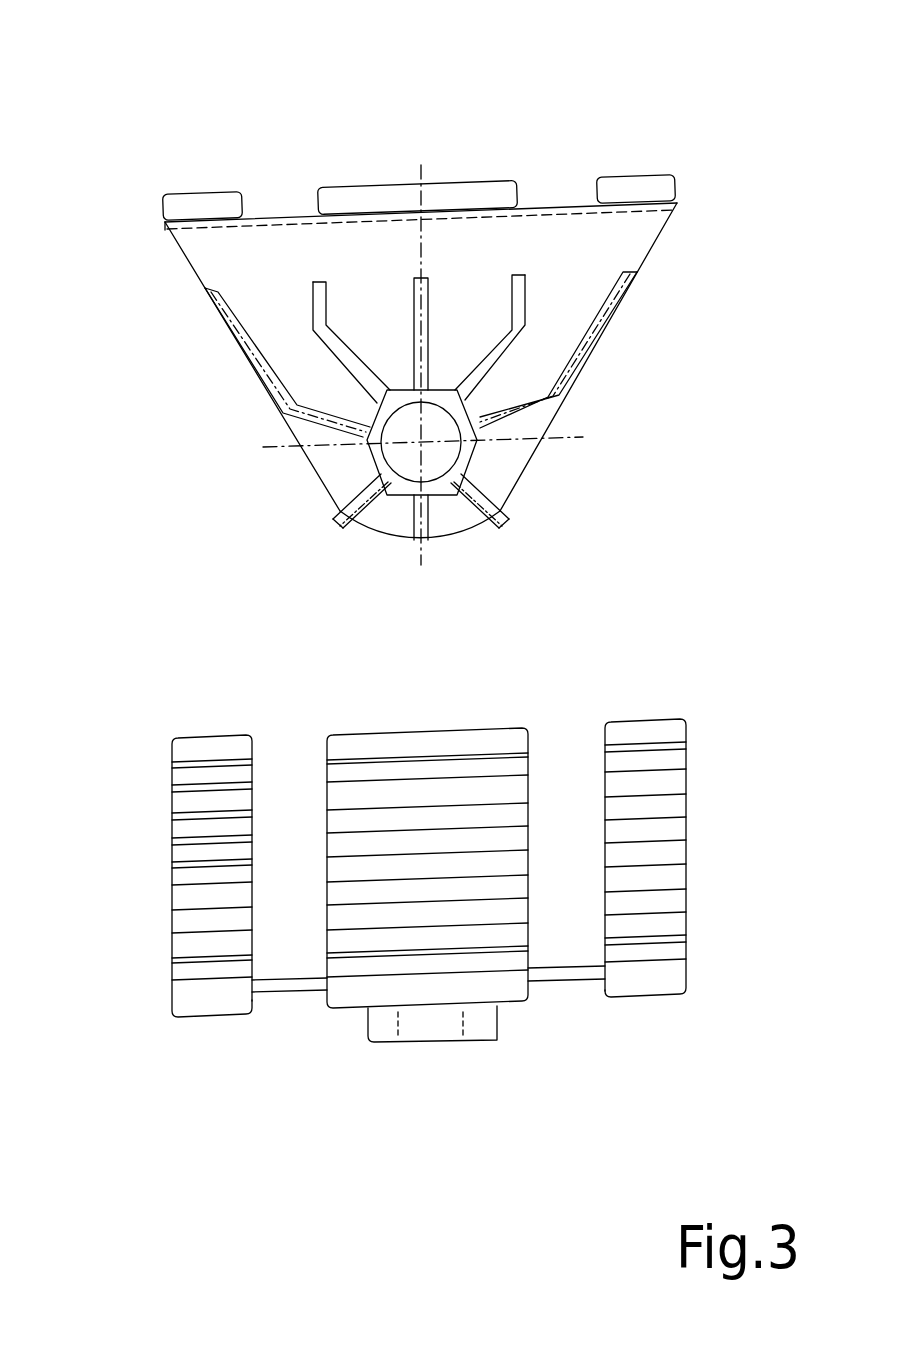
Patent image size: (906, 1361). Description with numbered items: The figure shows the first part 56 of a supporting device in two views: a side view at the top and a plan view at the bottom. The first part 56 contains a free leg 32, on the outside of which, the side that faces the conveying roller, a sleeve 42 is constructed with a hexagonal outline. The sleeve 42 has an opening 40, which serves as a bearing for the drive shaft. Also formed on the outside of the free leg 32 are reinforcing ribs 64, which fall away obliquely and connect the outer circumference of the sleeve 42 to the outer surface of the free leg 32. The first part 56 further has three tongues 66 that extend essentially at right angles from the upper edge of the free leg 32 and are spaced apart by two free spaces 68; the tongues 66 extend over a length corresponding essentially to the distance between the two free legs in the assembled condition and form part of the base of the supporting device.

The free leg 32 is at (552, 342).
The opening 40 is at (383, 417).
The sleeve 42 is at (368, 460).
The first part 56 is at (532, 228).
The reinforcing ribs 64 is at (493, 350).
The tongues 66 is at (370, 196).
The free spaces 68 is at (572, 847).